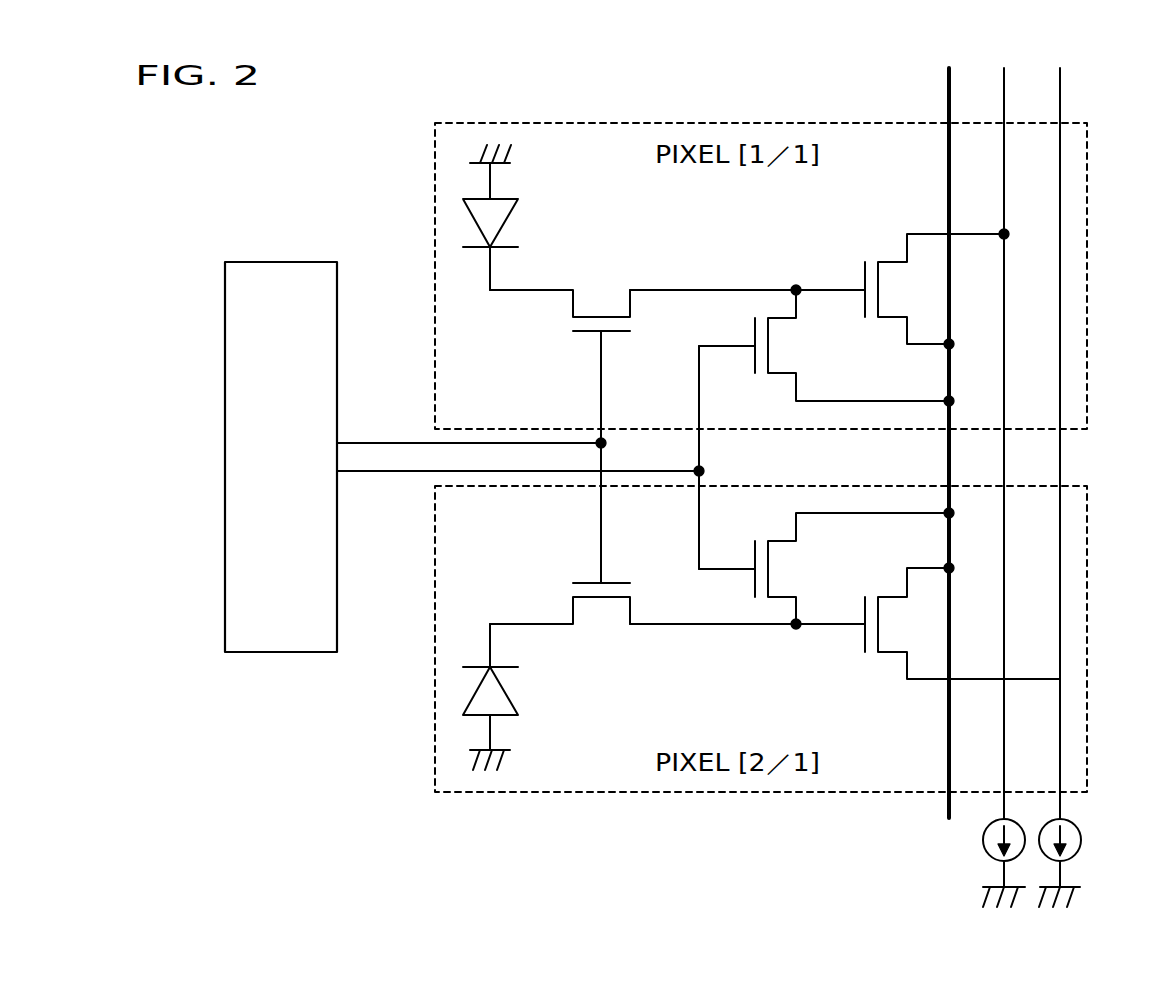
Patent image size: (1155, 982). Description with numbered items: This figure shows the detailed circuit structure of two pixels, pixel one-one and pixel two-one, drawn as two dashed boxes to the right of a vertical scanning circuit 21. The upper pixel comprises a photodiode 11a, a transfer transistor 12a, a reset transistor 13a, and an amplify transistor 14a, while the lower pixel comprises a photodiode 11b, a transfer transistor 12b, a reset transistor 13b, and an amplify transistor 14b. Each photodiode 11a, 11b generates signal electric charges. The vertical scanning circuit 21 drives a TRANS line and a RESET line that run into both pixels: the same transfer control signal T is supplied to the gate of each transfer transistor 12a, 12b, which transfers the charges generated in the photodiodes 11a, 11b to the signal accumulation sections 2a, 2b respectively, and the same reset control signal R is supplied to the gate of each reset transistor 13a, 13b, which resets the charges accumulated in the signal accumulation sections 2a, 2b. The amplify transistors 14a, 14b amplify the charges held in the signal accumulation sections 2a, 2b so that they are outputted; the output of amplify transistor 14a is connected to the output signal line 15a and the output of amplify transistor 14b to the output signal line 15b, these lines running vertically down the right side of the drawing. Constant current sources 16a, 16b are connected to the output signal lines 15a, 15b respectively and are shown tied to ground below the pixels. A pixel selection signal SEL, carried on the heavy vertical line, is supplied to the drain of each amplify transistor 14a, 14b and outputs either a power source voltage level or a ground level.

The vertical scanning circuit 21 is at (274, 262).
The photodiode 11a is at (506, 223).
The photodiode 11b is at (506, 693).
The transfer transistor 12a is at (594, 295).
The transfer transistor 12b is at (594, 620).
The reset transistor 13a is at (795, 362).
The reset transistor 13b is at (792, 580).
The amplify transistor 14a is at (853, 270).
The amplify transistor 14b is at (853, 643).
The signal accumulation section 2a is at (692, 289).
The signal accumulation section 2b is at (692, 624).
The output signal line 15a is at (1005, 95).
The output signal line 15b is at (1061, 95).
The constant current source 16a is at (983, 838).
The constant current source 16b is at (1080, 838).
The transfer control signal T is at (472, 443).
The reset control signal R is at (472, 471).
The pixel selection signal SEL is at (947, 102).